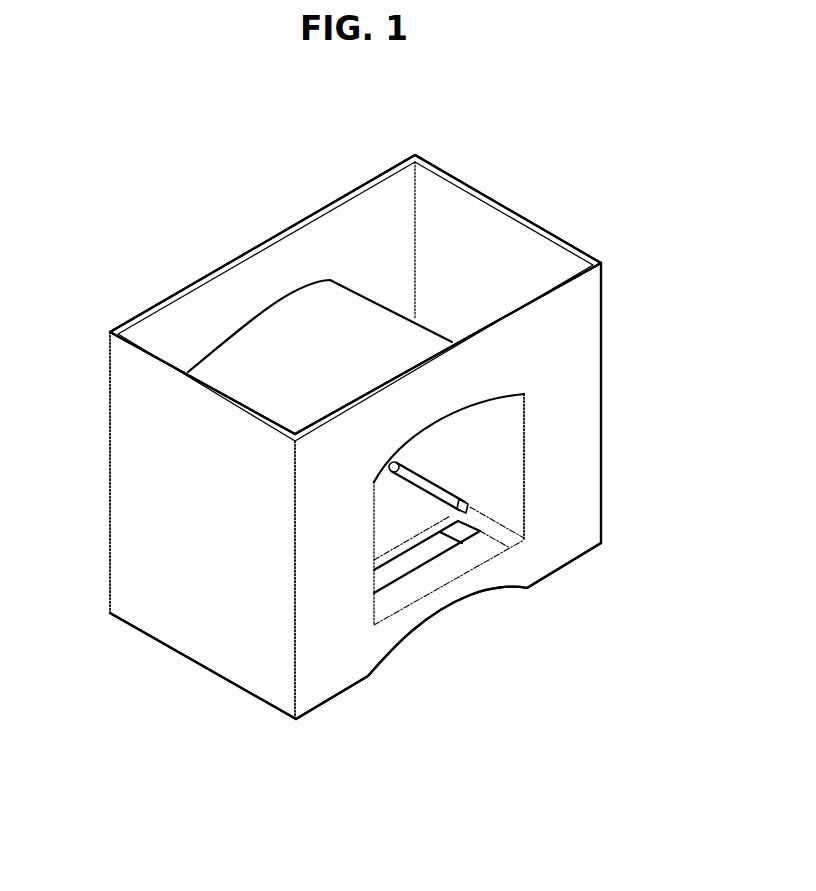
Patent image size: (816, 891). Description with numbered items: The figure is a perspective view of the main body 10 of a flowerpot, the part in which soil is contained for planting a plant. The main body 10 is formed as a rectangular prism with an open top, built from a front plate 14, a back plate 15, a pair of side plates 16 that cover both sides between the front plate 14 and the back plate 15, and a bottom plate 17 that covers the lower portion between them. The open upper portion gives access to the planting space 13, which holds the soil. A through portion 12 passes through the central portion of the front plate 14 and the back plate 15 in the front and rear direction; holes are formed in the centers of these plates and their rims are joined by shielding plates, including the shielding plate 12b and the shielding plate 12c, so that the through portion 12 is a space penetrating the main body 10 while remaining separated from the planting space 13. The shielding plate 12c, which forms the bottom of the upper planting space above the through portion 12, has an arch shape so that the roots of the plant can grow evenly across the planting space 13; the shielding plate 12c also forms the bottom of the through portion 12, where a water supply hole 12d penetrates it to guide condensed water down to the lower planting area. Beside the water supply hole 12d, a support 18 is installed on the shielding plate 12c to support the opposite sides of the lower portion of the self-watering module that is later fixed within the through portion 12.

The main body 10 is at (508, 187).
The through portion 12 is at (472, 459).
The shielding plate 12b is at (503, 452).
The shielding plate 12c is at (275, 313).
The water supply hole 12d is at (405, 562).
The planting space 13 is at (479, 269).
The front plate 14 is at (577, 357).
The back plate 15 is at (192, 284).
The side plate 16 is at (560, 238).
The bottom plate 17 is at (325, 703).
The support 18 is at (428, 497).